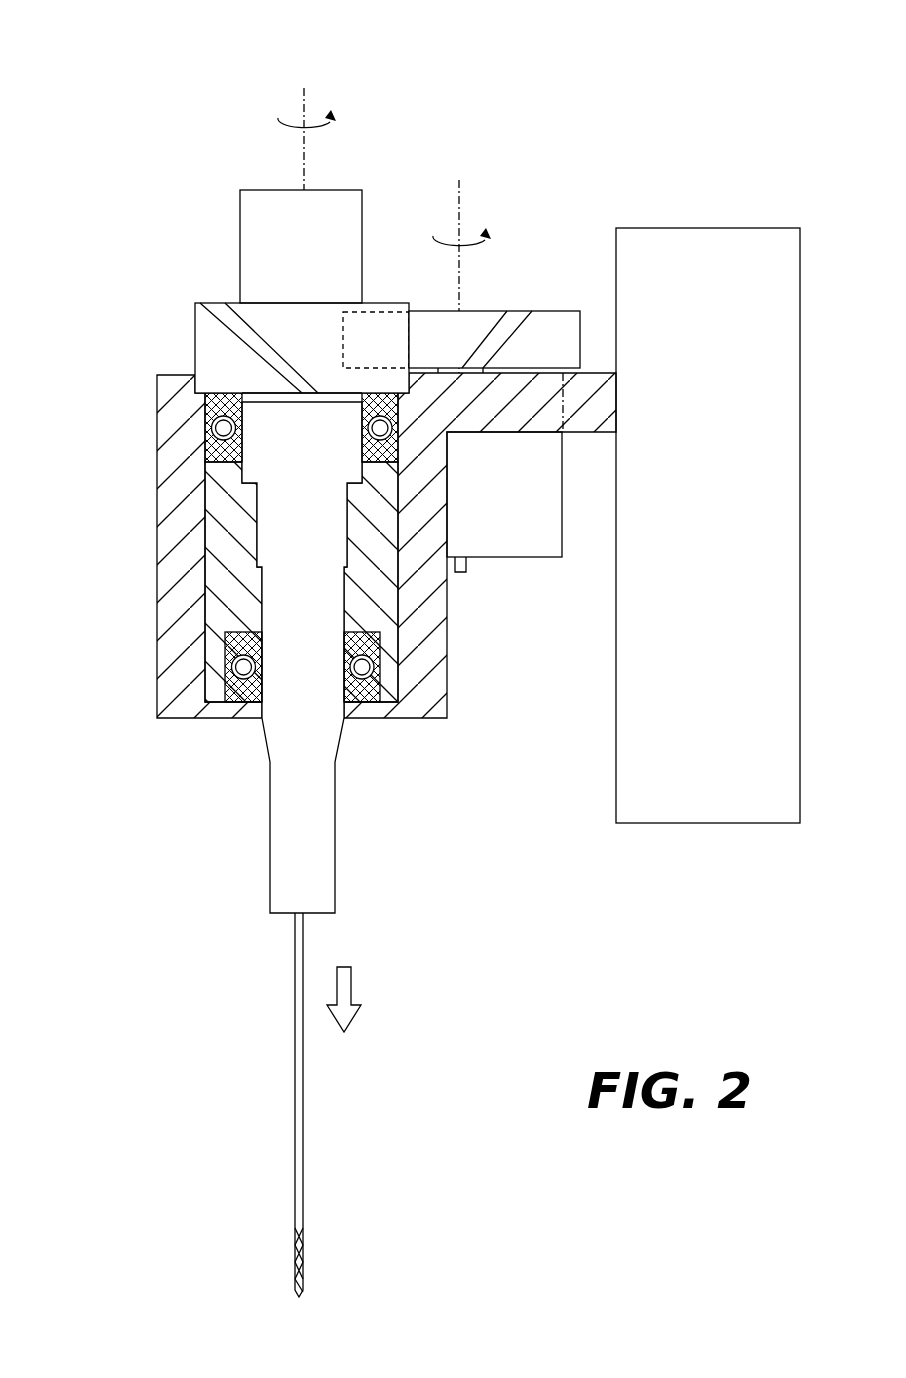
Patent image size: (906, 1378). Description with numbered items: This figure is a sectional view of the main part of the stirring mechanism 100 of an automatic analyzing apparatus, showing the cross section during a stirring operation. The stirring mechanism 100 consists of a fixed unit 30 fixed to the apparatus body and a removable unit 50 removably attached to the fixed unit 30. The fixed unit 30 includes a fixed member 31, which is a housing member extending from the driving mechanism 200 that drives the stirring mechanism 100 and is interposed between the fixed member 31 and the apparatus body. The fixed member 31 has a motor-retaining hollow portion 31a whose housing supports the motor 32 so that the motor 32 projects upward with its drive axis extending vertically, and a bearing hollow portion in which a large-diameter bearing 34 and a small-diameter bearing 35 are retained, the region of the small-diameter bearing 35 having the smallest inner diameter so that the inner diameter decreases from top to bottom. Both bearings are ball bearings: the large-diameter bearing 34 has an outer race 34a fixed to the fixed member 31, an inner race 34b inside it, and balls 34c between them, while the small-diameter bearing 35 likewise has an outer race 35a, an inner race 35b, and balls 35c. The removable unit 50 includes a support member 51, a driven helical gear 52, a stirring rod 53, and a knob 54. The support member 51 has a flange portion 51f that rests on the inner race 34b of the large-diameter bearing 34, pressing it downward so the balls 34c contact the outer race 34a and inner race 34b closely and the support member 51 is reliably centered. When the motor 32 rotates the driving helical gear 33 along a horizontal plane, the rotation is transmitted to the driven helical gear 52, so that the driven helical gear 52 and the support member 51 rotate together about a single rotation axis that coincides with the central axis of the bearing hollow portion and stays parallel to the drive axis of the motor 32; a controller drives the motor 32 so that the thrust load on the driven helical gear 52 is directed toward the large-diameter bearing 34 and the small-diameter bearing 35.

The stirring mechanism 100 is at (220, 34).
The driving mechanism 200 is at (722, 227).
The fixed unit 30 is at (386, 484).
The fixed member 31 is at (600, 383).
The motor-retaining hollow portion 31a is at (563, 400).
The motor 32 is at (526, 558).
The driving helical gear 33 is at (543, 311).
The large-diameter bearing 34 is at (209, 423).
The outer race 34a is at (207, 448).
The inner race 34b is at (205, 406).
The balls 34c is at (216, 430).
The small-diameter bearing 35 is at (385, 750).
The outer race 35a is at (388, 704).
The inner race 35b is at (350, 704).
The balls 35c is at (364, 700).
The removable unit 50 is at (252, 849).
The support member 51 is at (271, 848).
The flange portion 51f is at (238, 392).
The driven helical gear 52 is at (194, 300).
The stirring rod 53 is at (295, 1062).
The knob 54 is at (240, 247).